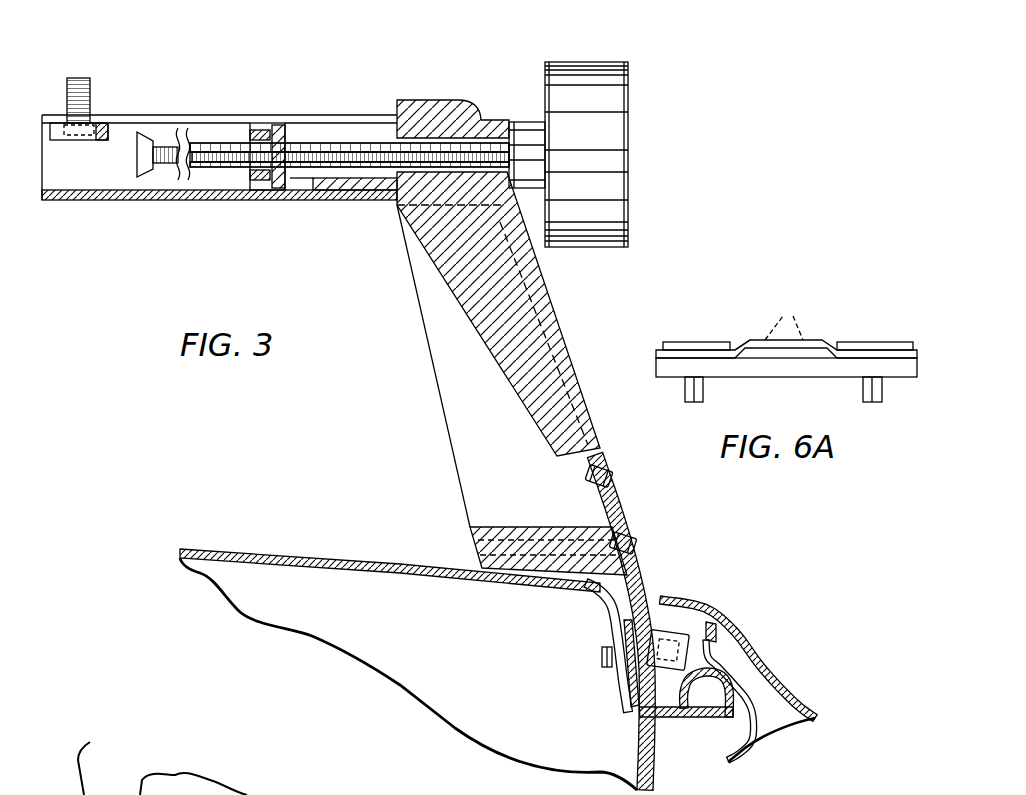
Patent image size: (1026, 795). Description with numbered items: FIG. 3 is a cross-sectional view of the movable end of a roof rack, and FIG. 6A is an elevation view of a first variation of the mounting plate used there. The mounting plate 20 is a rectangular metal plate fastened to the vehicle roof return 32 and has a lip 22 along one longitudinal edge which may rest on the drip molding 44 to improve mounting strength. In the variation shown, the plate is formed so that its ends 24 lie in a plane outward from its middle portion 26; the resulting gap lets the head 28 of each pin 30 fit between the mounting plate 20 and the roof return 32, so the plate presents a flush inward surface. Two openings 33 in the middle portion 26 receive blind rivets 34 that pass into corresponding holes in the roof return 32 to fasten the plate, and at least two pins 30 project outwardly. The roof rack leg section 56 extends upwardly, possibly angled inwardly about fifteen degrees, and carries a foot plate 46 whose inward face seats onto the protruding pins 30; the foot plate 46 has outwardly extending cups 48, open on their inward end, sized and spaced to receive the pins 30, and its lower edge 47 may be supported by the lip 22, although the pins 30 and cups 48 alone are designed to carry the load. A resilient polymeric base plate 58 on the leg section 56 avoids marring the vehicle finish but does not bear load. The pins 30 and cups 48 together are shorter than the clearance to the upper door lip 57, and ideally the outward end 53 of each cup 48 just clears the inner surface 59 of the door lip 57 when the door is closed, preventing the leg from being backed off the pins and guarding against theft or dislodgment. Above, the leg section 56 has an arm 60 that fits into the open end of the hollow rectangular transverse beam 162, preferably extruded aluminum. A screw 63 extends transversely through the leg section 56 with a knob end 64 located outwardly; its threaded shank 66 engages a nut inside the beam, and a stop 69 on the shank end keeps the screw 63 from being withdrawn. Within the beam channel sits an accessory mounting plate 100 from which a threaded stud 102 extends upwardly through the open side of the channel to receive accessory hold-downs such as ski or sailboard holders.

In FIG. 3, the threaded stud 102 is at (78, 78).
In FIG. 3, the accessory mounting plate 100 is at (93, 88).
In FIG. 3, the stop 69 is at (136, 130).
In FIG. 3, the rectangular channel transverse beam 162 is at (252, 118).
In FIG. 3, the screw 63 is at (356, 140).
In FIG. 3, the threaded shank 66 is at (230, 170).
In FIG. 3, the arm 60 is at (352, 192).
In FIG. 3, the knob end 64 is at (632, 128).
In FIG. 3, the leg section 56 is at (560, 355).
In FIG. 3, the base plate 58 is at (472, 543).
In FIG. 3, the foot plate 46 is at (650, 600).
In FIG. 3, the lip 22 is at (637, 742).
In FIG. 6A, the lip 22 is at (905, 372).
In FIG. 3, the mounting plate 20 is at (628, 668).
In FIG. 6A, the mounting plate 20 is at (834, 342).
In FIG. 3, the roof return 32 is at (598, 605).
In FIG. 3, the blind rivet 34 is at (602, 657).
In FIG. 3, the cup 48 is at (688, 632).
In FIG. 3, the lower edge 47 is at (640, 702).
In FIG. 3, the drip molding 44 is at (675, 722).
In FIG. 3, the upper door lip 57 is at (735, 608).
In FIG. 3, the outward end 53 is at (718, 632).
In FIG. 3, the inner surface 59 is at (756, 640).
In FIG. 6A, the head 28 is at (684, 342).
In FIG. 6A, the ends 24 is at (656, 352).
In FIG. 6A, the middle portion 26 is at (740, 345).
In FIG. 6A, the openings 33 is at (784, 315).
In FIG. 6A, the pin 30 is at (700, 386).